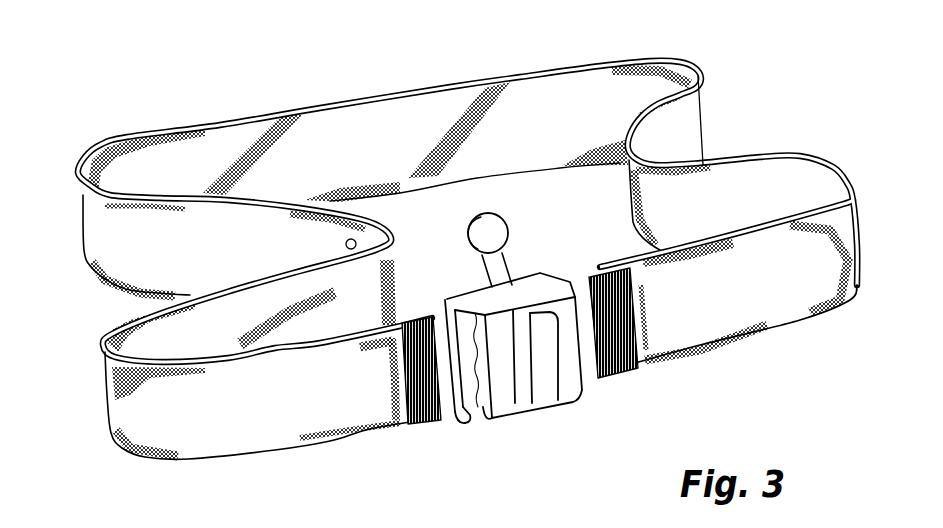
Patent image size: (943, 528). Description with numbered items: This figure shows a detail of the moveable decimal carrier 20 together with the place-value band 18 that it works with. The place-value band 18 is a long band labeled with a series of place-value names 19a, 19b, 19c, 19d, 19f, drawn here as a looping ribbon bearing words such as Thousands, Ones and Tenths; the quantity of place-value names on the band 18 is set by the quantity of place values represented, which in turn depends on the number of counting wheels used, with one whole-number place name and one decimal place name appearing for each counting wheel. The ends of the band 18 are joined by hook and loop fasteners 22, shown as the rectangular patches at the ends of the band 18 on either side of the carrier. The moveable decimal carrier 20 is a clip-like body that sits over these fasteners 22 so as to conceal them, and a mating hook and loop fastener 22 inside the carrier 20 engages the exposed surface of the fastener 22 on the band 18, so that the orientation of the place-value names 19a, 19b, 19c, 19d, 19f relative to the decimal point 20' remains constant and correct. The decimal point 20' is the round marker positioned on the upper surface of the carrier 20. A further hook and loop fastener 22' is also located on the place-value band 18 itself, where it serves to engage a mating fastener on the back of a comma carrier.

The place-value band 18 is at (427, 103).
The place-value name 19a is at (700, 133).
The place-value name 19b is at (722, 292).
The place-value name 19c is at (287, 420).
The place-value name 19d is at (103, 411).
The place-value name 19f is at (210, 243).
The moveable decimal carrier 20 is at (513, 384).
The decimal point 20' is at (511, 147).
The hook and loop fastener 22 is at (520, 359).
The hook and loop fastener 22' is at (397, 225).